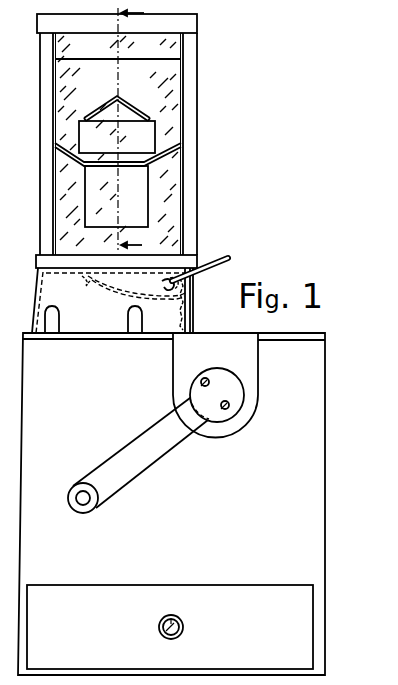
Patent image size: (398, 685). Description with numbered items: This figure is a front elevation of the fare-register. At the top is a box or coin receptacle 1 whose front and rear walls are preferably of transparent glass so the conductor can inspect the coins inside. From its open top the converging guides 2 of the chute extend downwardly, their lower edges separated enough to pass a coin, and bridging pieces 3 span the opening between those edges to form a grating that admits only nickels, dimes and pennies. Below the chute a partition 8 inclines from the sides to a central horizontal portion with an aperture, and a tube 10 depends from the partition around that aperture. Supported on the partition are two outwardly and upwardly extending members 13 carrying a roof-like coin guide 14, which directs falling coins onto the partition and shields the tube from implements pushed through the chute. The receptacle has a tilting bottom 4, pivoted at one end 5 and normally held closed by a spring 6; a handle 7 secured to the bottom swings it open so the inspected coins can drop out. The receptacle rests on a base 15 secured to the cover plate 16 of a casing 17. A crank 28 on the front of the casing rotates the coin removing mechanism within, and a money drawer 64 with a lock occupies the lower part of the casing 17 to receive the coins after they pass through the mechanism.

The box or coin receptacle 1 is at (197, 140).
The converging guides of the chute 2 is at (118, 48).
The bridging pieces 3 is at (78, 60).
The tilting bottom 4 is at (76, 276).
The pivot end 5 is at (165, 282).
The spring 6 is at (125, 290).
The handle 7 is at (200, 258).
The partition 8 is at (118, 156).
The tube 10 is at (128, 212).
The outwardly and upwardly extending members 13 is at (117, 137).
The roof-like coin guide 14 is at (117, 105).
The base 15 is at (111, 300).
The cover plate 16 is at (291, 340).
The casing 17 is at (171, 504).
The crank 28 is at (129, 449).
The money drawer 64 is at (170, 627).